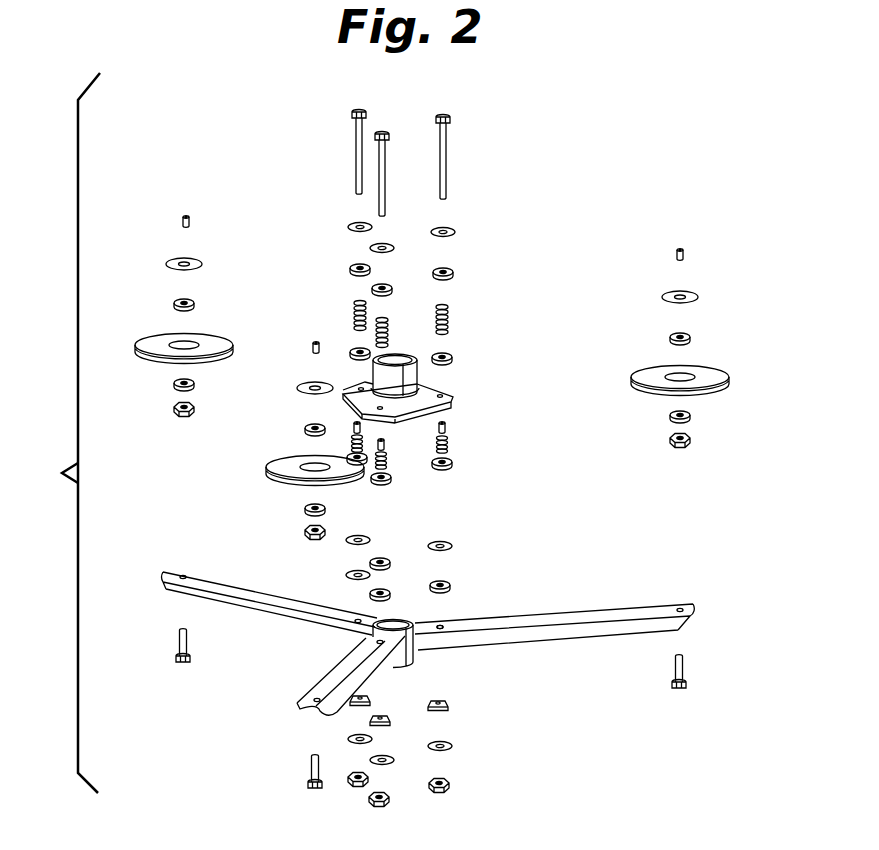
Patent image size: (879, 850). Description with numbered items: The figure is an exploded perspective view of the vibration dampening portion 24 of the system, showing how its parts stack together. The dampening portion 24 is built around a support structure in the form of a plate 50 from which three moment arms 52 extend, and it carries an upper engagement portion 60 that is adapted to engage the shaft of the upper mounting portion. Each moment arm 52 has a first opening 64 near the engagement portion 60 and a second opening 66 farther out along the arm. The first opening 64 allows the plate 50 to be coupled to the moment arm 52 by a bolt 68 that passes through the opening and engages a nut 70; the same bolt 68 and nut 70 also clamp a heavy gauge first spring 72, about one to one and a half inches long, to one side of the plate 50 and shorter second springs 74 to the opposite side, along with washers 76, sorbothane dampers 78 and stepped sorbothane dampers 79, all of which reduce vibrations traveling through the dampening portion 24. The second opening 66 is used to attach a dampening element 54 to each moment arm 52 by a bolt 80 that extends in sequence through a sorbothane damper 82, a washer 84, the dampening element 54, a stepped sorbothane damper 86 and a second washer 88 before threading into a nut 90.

The dampening portion 24 is at (64, 433).
The plate 50 is at (448, 400).
The moment arm 52 is at (328, 678).
The dampening element 54 is at (651, 372).
The upper engagement portion 60 is at (376, 374).
The first opening 64 is at (443, 624).
The second opening 66 is at (697, 605).
The bolt 68 is at (364, 110).
The nut 70 is at (450, 784).
The first spring 72 is at (446, 306).
The second spring 74 is at (446, 426).
The washer 76 is at (448, 228).
The sorbothane damper 78 is at (448, 268).
The stepped sorbothane damper 79 is at (450, 706).
The bolt 80 is at (177, 643).
The sorbothane damper 82 is at (175, 409).
The washer 84 is at (176, 383).
The stepped sorbothane damper 86 is at (178, 301).
The second washer 88 is at (197, 263).
The nut 90 is at (189, 218).